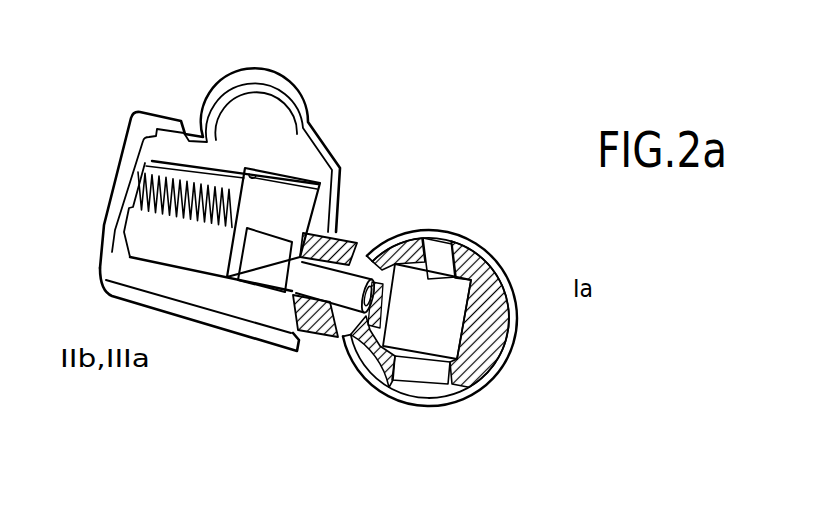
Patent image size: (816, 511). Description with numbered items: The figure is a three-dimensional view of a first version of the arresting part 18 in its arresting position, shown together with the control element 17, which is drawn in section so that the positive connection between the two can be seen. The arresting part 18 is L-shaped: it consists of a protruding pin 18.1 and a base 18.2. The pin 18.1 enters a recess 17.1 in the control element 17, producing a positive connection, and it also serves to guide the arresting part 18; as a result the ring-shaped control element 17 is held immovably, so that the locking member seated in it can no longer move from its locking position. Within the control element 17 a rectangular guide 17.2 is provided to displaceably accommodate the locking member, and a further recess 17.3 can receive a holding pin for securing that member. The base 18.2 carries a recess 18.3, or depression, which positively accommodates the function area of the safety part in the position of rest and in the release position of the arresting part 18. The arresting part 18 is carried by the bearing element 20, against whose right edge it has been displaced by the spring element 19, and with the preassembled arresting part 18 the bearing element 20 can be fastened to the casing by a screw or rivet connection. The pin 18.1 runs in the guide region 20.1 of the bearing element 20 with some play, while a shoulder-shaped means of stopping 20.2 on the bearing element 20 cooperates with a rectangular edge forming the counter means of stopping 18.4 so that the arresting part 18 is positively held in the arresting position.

The bearing element 20 is at (250, 110).
The guide region 20.1 is at (312, 333).
The means of stopping 20.2 is at (247, 168).
The spring element 19 is at (143, 187).
The arresting part 18 is at (280, 206).
The pin 18.1 is at (331, 283).
The base 18.2 is at (280, 206).
The recess 18.3 is at (257, 263).
The counter means of stopping 18.4 is at (277, 172).
The control element 17 is at (467, 258).
The recess 17.1 is at (350, 248).
The rectangular guide 17.2 is at (440, 337).
The recess 17.3 is at (398, 380).